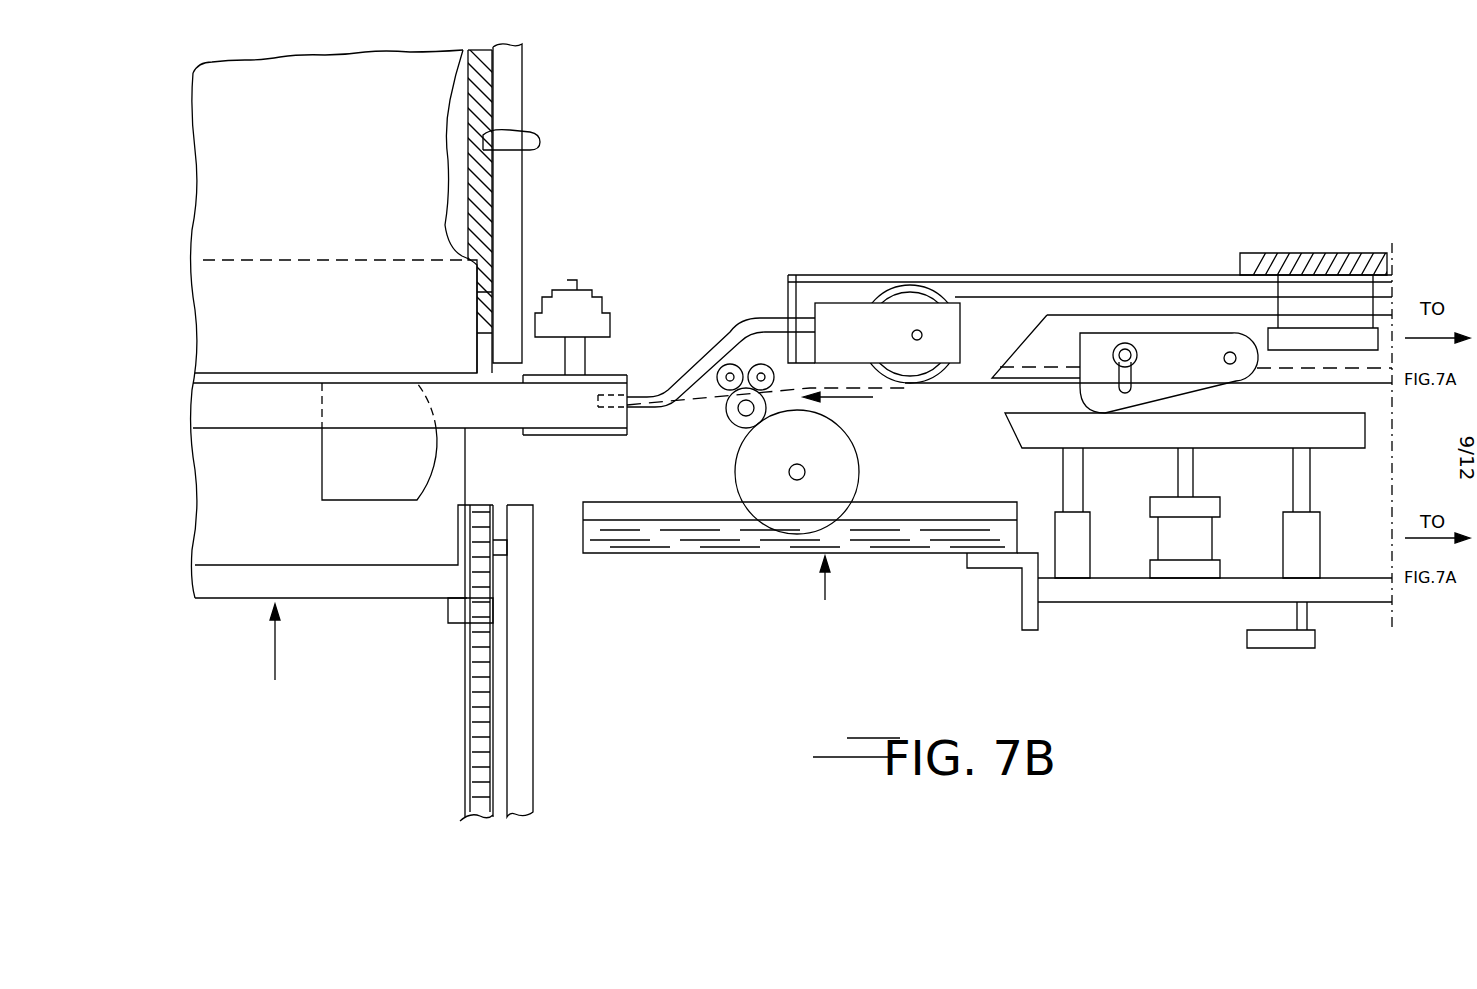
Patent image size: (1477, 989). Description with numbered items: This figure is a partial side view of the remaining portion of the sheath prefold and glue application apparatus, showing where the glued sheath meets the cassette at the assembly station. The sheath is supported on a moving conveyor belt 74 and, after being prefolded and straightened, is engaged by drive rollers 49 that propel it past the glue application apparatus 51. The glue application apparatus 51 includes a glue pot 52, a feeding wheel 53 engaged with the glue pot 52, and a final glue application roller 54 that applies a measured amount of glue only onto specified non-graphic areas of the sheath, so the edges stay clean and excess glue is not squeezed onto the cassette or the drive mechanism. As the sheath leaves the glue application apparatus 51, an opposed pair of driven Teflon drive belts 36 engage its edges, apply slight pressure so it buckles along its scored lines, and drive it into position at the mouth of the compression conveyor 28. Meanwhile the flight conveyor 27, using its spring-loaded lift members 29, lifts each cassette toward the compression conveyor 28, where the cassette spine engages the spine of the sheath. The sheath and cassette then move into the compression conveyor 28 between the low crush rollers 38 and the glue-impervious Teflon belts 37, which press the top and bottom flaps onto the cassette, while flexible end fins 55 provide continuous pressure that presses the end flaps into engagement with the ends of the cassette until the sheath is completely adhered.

The flight conveyor 27 is at (488, 672).
The compression conveyor 28 is at (527, 77).
The lift members 29 is at (483, 612).
The drive belts 36 is at (490, 410).
The Teflon belts 37 is at (232, 158).
The low crush rollers 38 is at (210, 315).
The drive rollers 49 is at (750, 362).
The glue application apparatus 51 is at (815, 601).
The glue pot 52 is at (898, 543).
The feeding wheel 53 is at (777, 508).
The final glue application roller 54 is at (727, 420).
The flexible end fins 55 is at (540, 148).
The conveyor belt 74 is at (913, 282).